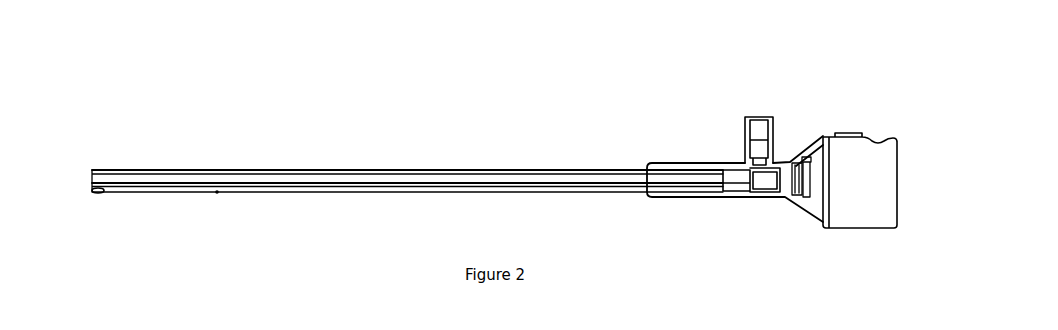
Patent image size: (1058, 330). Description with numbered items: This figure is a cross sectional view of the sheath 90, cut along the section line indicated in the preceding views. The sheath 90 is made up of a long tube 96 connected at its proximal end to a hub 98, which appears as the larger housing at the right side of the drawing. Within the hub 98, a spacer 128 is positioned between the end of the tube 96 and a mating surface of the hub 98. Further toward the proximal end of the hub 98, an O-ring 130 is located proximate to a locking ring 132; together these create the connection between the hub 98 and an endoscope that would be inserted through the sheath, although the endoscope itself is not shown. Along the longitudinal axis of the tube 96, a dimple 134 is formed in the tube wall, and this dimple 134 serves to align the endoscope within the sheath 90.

The sheath 90 is at (878, 68).
The tube 96 is at (450, 168).
The hub 98 is at (748, 216).
The spacer 128 is at (730, 165).
The O-ring 130 is at (788, 162).
The locking ring 132 is at (804, 158).
The dimple 134 is at (225, 205).